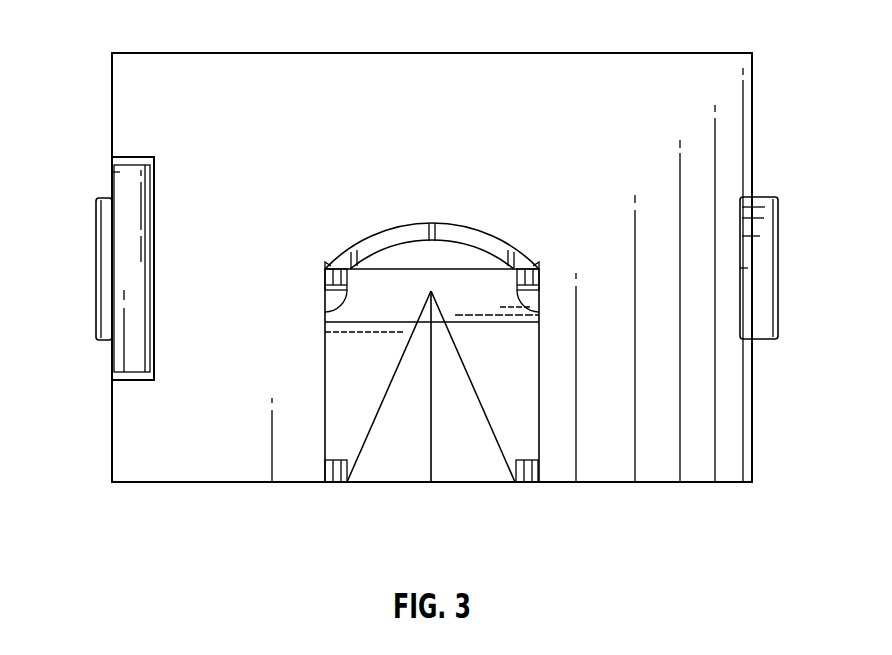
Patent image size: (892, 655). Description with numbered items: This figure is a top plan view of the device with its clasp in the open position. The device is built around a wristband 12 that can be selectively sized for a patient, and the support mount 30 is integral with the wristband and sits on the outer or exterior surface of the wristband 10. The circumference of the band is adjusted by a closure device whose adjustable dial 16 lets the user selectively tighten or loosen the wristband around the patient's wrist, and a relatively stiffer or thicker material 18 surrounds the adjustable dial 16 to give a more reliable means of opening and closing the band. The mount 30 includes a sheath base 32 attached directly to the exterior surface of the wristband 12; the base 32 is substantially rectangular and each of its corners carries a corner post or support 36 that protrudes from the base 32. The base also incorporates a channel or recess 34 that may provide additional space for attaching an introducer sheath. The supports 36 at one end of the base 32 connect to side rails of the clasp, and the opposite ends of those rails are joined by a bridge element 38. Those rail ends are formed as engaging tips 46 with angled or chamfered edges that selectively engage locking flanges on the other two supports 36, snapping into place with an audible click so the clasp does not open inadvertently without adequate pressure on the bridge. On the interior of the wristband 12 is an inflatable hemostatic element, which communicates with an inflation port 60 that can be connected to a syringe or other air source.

The wristband 10 is at (783, 30).
The wristband 12 is at (436, 124).
The adjustable dial 16 is at (96, 258).
The stiffer material 18 is at (118, 172).
The support mount 30 is at (488, 558).
The sheath base 32 is at (376, 387).
The channel 34 is at (400, 465).
The corner post 36 is at (327, 312).
The bridge element 38 is at (468, 242).
The engaging tips 46 is at (327, 262).
The inflation port 60 is at (762, 197).